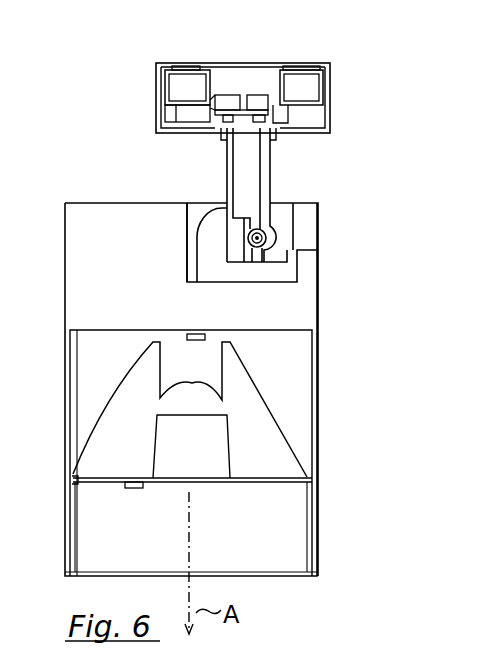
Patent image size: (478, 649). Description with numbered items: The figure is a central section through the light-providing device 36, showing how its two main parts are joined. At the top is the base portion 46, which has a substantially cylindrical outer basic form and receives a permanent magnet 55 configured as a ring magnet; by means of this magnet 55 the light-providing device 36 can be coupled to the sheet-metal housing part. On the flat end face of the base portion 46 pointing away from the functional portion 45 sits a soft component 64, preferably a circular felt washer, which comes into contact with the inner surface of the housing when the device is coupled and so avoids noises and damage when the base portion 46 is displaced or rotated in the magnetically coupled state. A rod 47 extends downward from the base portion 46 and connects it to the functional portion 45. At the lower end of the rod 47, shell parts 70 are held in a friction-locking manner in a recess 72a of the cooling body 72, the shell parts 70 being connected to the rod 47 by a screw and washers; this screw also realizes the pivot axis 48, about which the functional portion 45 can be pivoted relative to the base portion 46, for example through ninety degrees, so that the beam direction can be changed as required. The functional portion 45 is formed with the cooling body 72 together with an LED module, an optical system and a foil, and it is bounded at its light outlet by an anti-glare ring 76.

The light-providing device 36 is at (85, 116).
The functional portion 45 is at (328, 308).
The base portion 46 is at (352, 93).
The rod 47 is at (272, 172).
The pivot axis 48 is at (268, 235).
The permanent magnet 55 is at (185, 78).
The soft component 64 is at (223, 66).
The shell parts 70 is at (197, 228).
The cooling body 72 is at (308, 270).
The recess 72a is at (187, 243).
The anti-glare ring 76 is at (312, 533).